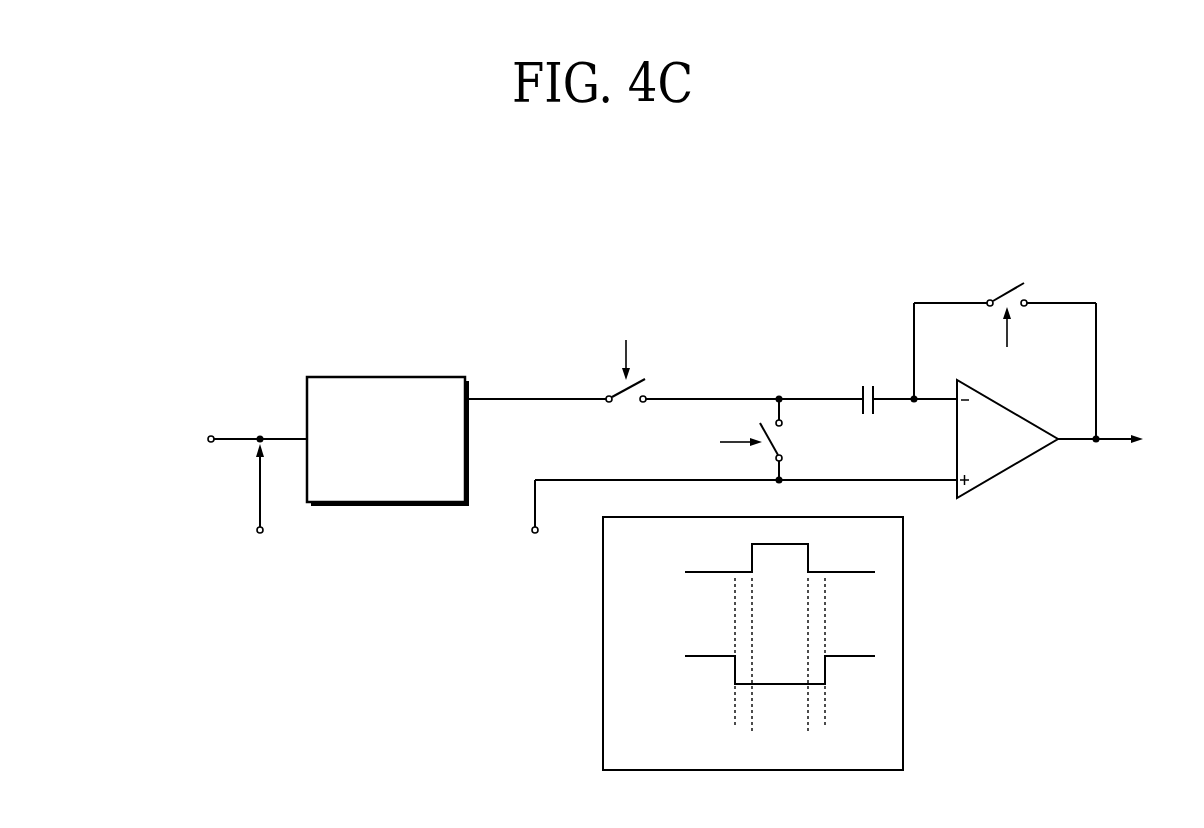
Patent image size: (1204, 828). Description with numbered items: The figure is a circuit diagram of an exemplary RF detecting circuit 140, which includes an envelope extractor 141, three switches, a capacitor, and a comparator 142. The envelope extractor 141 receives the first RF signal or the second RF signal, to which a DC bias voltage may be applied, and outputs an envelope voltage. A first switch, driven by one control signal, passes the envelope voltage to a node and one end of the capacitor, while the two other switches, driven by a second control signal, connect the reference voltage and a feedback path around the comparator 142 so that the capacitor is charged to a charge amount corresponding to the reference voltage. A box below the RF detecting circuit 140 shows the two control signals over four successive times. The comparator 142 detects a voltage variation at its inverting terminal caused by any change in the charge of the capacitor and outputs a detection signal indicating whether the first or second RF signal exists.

The RF detecting circuit 140 is at (1098, 211).
The envelope extractor 141 is at (410, 376).
The comparator 142 is at (1025, 462).